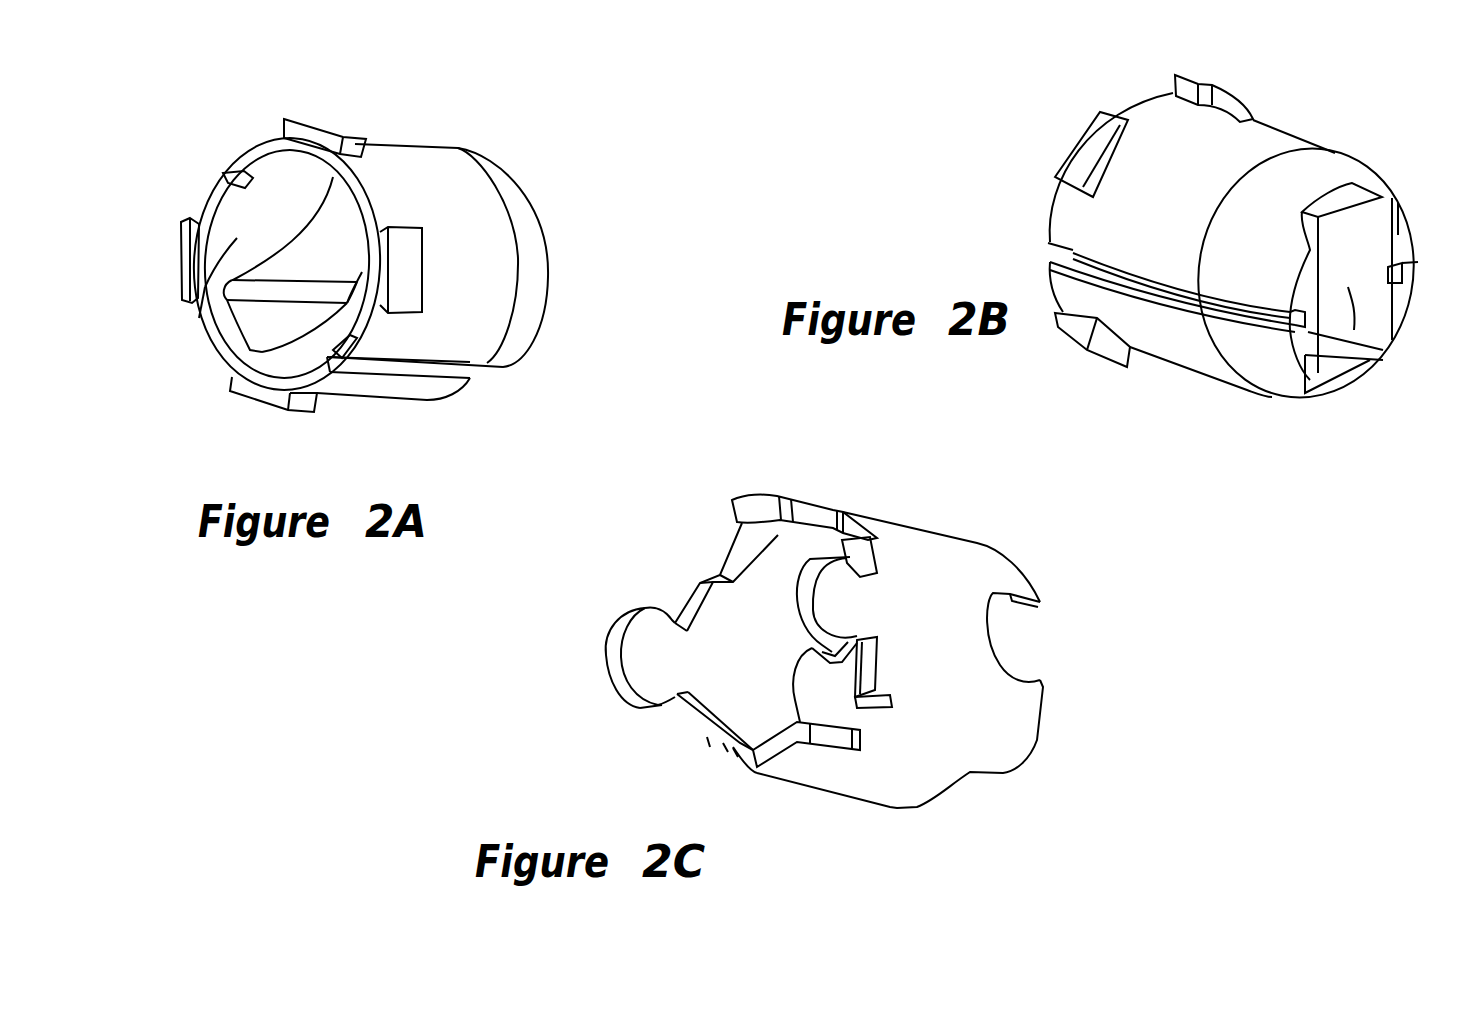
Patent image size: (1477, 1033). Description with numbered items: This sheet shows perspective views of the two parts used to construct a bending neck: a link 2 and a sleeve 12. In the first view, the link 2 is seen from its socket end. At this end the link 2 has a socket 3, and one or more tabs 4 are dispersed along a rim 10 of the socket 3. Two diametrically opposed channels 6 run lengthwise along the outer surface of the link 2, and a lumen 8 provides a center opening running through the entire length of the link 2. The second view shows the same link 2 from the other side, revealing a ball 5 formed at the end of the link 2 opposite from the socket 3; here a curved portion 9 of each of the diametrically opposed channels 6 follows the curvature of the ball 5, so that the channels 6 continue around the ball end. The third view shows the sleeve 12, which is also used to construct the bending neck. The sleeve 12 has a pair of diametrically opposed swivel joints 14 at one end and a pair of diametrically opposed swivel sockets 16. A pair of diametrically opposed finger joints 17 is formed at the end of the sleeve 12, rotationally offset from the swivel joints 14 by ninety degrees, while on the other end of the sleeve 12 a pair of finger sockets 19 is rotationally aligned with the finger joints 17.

In FIG. 2A, the link 2 is at (463, 116).
In FIG. 2A, the socket 3 is at (237, 238).
In FIG. 2A, the tab 4 is at (310, 127).
In FIG. 2B, the tab 4 is at (1233, 93).
In FIG. 2A, the ball 5 is at (535, 263).
In FIG. 2B, the ball 5 is at (1295, 180).
In FIG. 2A, the channel 6 is at (236, 170).
In FIG. 2B, the channel 6 is at (1147, 280).
In FIG. 2A, the lumen 8 is at (330, 246).
In FIG. 2B, the lumen 8 is at (1348, 287).
In FIG. 2B, the curved portion 9 is at (1265, 325).
In FIG. 2A, the rim 10 is at (355, 337).
In FIG. 2C, the sleeve 12 is at (921, 638).
In FIG. 2C, the swivel joint 14 is at (657, 663).
In FIG. 2C, the swivel socket 16 is at (1020, 643).
In FIG. 2C, the finger joint 17 is at (747, 498).
In FIG. 2C, the finger socket 19 is at (737, 547).